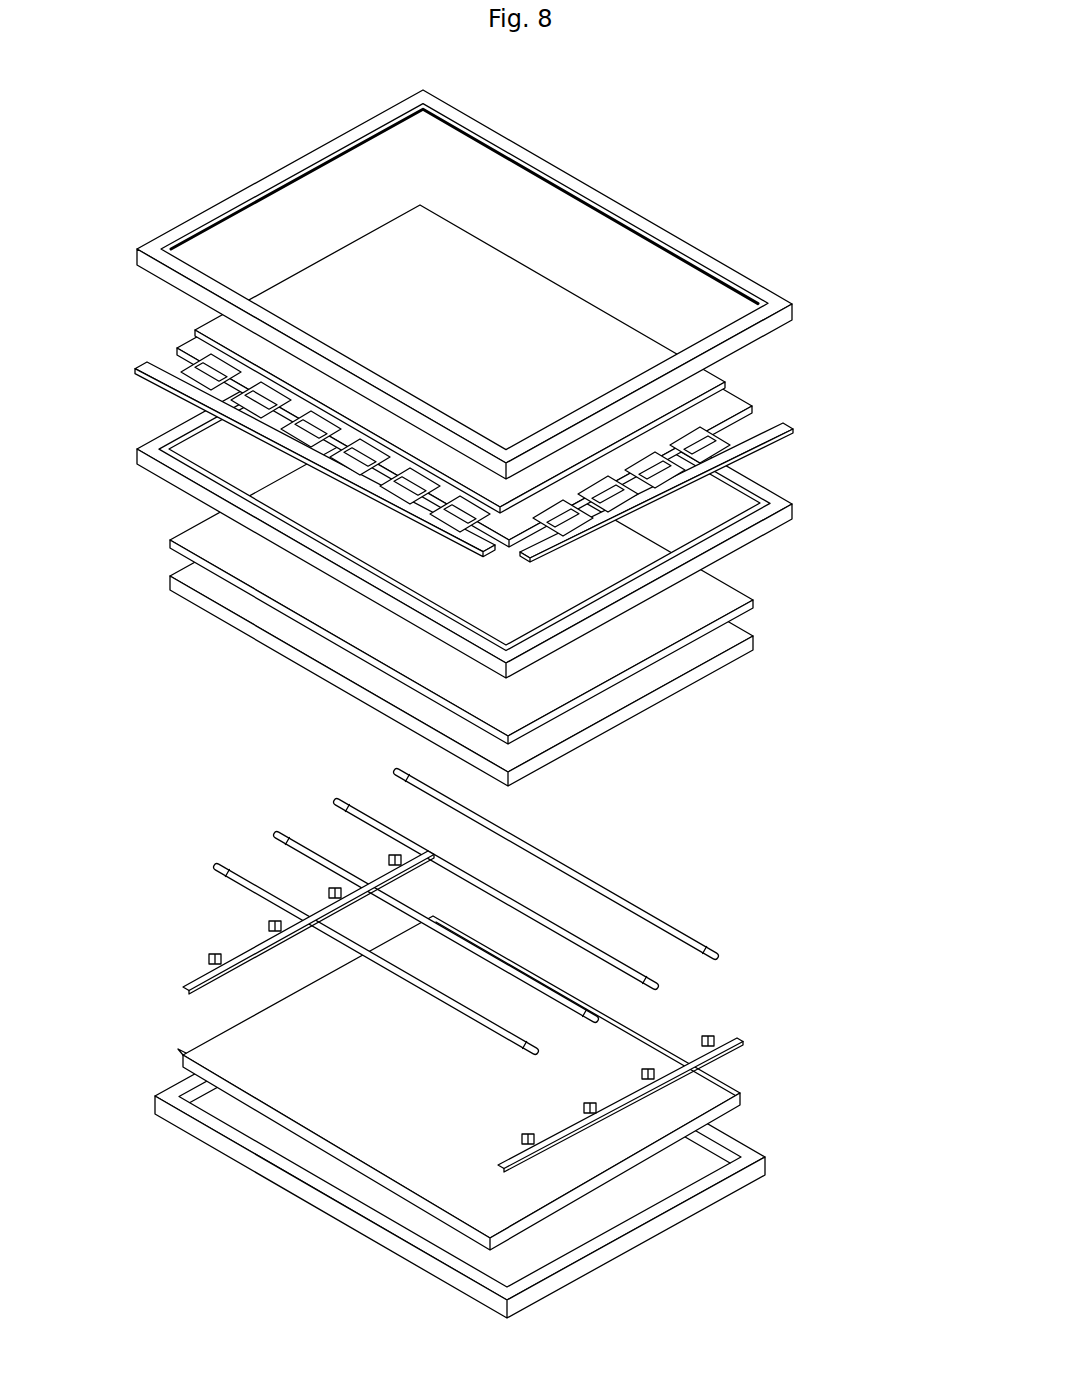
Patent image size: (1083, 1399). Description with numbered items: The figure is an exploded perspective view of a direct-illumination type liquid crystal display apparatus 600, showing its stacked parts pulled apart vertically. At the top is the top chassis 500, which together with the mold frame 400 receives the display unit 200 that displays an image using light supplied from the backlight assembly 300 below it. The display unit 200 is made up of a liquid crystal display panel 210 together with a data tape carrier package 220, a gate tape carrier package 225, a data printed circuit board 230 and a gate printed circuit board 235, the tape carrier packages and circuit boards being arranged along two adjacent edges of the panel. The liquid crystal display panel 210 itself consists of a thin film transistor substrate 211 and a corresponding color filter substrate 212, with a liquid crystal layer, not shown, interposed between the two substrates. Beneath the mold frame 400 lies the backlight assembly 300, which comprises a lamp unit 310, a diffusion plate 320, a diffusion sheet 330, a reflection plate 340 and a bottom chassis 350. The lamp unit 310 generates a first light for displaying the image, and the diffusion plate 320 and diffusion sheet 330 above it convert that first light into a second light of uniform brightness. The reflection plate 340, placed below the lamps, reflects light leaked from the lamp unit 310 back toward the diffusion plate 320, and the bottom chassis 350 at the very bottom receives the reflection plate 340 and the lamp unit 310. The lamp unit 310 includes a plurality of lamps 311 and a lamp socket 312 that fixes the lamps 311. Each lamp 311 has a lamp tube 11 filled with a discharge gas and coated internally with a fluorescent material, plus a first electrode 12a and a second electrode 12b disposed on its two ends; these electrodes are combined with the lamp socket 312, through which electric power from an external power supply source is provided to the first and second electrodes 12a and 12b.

The liquid crystal display apparatus 600 is at (668, 74).
The top chassis 500 is at (750, 290).
The display unit 200 is at (183, 328).
The liquid crystal display panel 210 is at (852, 347).
The thin film transistor substrate 211 is at (740, 396).
The color filter substrate 212 is at (732, 373).
The data tape carrier package 220 is at (187, 347).
The data printed circuit board 230 is at (147, 362).
The gate tape carrier package 225 is at (745, 432).
The gate printed circuit board 235 is at (752, 438).
The mold frame 400 is at (768, 528).
The backlight assembly 300 is at (108, 1115).
The diffusion sheet 330 is at (270, 583).
The diffusion plate 320 is at (275, 625).
The lamp unit 310 is at (772, 1042).
The lamp 311 is at (662, 882).
The lamp socket 312 is at (738, 1032).
The lamp tube 11 is at (297, 855).
The first electrode 12a is at (283, 838).
The second electrode 12b is at (596, 1020).
The reflection plate 340 is at (308, 1130).
The bottom chassis 350 is at (340, 1215).